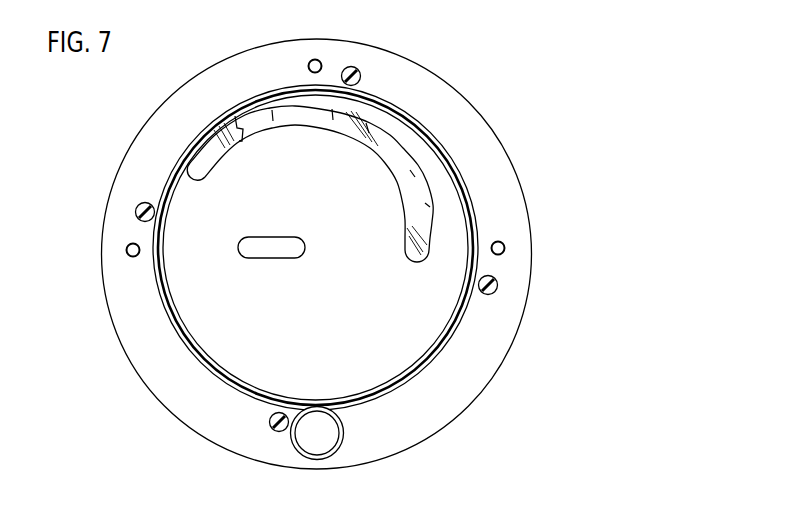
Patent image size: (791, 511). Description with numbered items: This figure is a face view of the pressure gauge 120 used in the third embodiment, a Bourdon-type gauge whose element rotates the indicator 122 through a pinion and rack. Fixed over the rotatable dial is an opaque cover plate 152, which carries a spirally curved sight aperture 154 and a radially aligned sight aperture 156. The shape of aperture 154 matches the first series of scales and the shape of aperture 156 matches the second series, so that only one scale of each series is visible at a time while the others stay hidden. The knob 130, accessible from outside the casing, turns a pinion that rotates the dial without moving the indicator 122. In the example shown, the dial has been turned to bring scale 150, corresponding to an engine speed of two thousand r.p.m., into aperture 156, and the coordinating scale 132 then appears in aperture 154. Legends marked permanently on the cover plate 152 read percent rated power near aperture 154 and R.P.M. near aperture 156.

The pressure gauge 120 is at (485, 118).
The indicator 122 is at (224, 113).
The scale 132 is at (270, 112).
The spirally curved sight aperture 154 is at (424, 233).
The cover plate 152 is at (335, 322).
The scale 150 is at (298, 247).
The radially aligned sight aperture 156 is at (250, 238).
The knob 130 is at (330, 438).